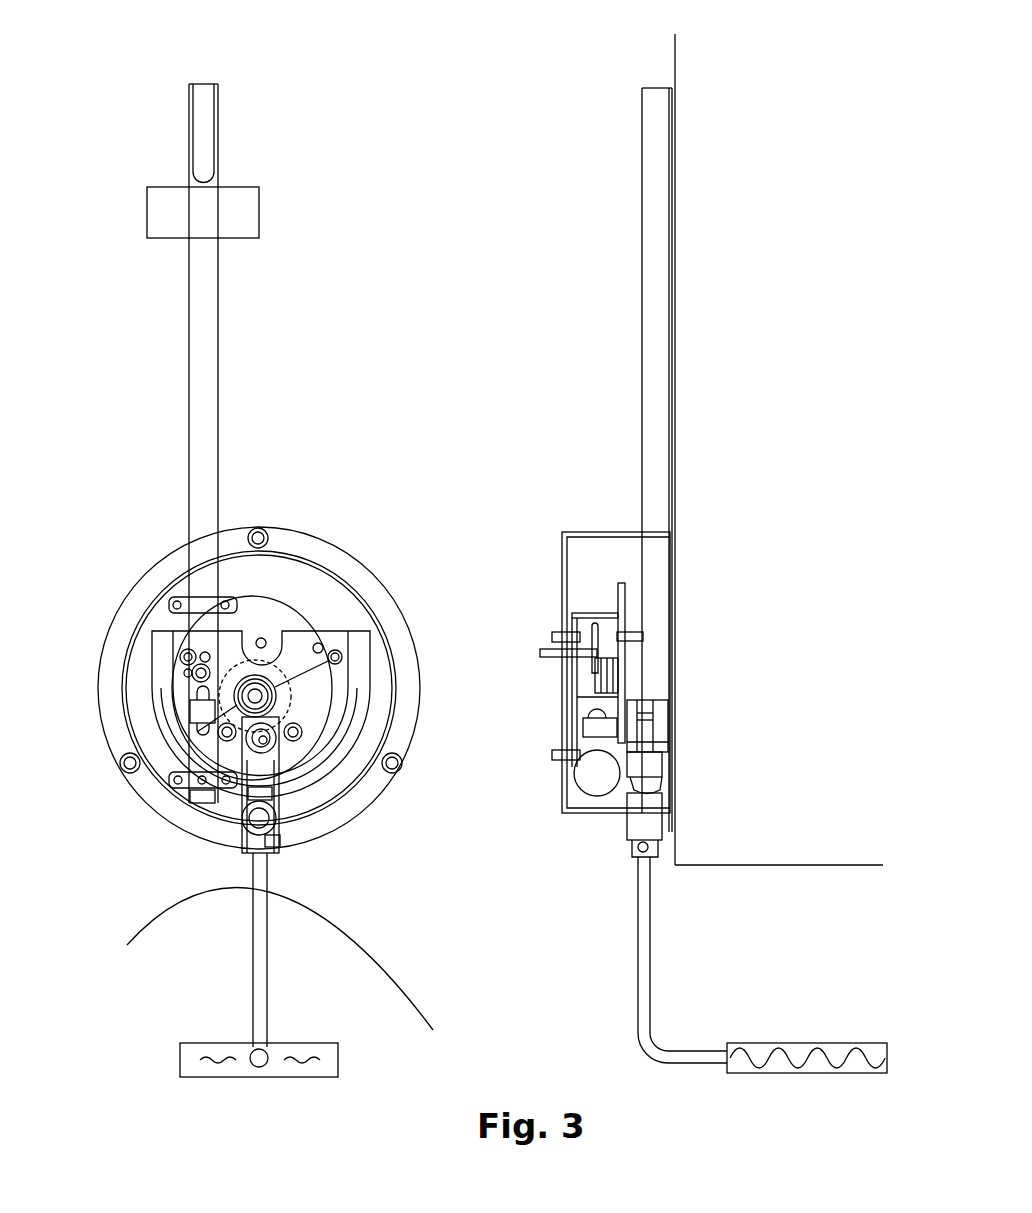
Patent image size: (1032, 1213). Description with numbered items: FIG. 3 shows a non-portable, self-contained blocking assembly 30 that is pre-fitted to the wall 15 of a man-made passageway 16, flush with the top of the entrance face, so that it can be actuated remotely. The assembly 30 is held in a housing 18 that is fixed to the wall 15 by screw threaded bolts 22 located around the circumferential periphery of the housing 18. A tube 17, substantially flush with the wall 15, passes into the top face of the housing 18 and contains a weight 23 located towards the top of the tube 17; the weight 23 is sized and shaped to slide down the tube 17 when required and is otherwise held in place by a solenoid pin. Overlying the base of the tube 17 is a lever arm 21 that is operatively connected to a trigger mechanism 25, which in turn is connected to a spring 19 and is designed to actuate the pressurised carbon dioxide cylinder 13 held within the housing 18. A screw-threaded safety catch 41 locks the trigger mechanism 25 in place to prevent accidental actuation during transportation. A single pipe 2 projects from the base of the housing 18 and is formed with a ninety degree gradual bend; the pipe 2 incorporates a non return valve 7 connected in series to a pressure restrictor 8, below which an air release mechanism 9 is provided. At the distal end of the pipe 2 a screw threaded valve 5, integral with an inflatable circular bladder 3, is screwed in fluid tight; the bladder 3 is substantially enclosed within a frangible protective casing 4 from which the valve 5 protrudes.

The pipe 2 is at (260, 987).
The inflatable circular bladder 3 is at (297, 1057).
The frangible protective casing 4 is at (212, 1077).
The screw threaded valve 5 is at (242, 1047).
The non return valve 7 is at (657, 777).
The pressure restrictor 8 is at (647, 807).
The screwthreaded air release mechanism 9 is at (640, 850).
The pressurised carbon dioxide cylinder 13 is at (155, 655).
The wall 15 is at (674, 362).
The passageway 16 is at (168, 940).
The tube 17 is at (642, 170).
The housing 18 is at (362, 563).
The spring 19 is at (342, 646).
The lever arm 21 is at (643, 662).
The screw threaded bolts 22 is at (262, 528).
The weight 23 is at (208, 157).
The trigger mechanism 25 is at (598, 627).
The self-contained assembly 30 is at (390, 448).
The safety catch 41 is at (282, 840).